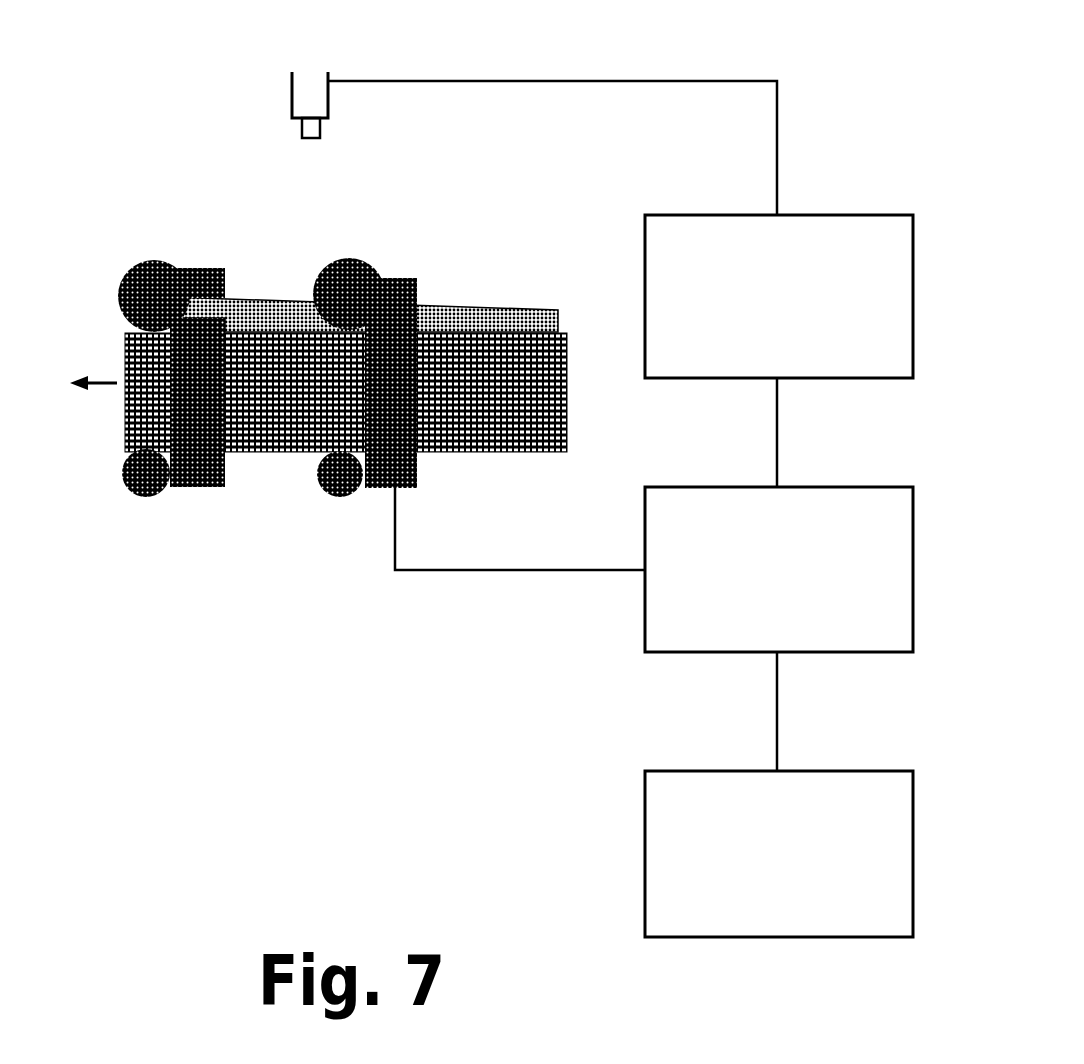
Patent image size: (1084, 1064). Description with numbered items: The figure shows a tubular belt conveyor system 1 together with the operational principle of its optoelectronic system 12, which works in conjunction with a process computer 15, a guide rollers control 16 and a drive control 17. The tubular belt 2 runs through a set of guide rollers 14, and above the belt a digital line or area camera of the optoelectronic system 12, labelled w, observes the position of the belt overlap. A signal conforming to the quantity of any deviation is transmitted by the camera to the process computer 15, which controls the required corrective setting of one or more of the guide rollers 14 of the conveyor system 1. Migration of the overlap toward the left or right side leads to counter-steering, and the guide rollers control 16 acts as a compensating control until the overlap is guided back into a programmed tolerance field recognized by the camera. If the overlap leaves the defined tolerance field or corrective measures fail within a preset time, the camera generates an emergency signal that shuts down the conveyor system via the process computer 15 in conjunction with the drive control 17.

The tubular belt conveyor system 1 is at (190, 198).
The tubular belt 2 is at (128, 412).
The optoelectronic system 12 is at (292, 83).
The guide rollers 14 is at (205, 487).
The process computer 15 is at (779, 296).
The guide rollers control 16 is at (779, 569).
The drive control 17 is at (779, 854).